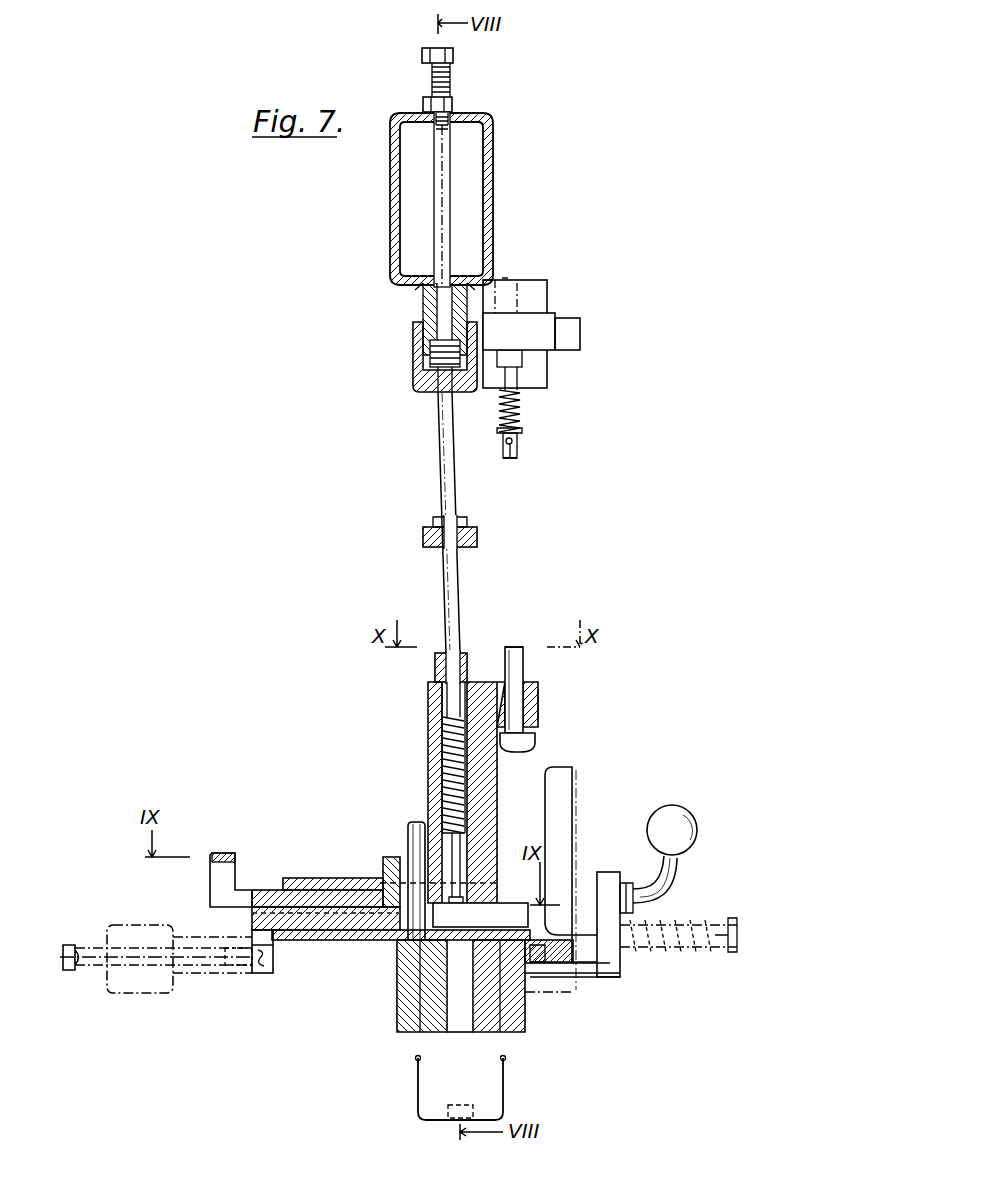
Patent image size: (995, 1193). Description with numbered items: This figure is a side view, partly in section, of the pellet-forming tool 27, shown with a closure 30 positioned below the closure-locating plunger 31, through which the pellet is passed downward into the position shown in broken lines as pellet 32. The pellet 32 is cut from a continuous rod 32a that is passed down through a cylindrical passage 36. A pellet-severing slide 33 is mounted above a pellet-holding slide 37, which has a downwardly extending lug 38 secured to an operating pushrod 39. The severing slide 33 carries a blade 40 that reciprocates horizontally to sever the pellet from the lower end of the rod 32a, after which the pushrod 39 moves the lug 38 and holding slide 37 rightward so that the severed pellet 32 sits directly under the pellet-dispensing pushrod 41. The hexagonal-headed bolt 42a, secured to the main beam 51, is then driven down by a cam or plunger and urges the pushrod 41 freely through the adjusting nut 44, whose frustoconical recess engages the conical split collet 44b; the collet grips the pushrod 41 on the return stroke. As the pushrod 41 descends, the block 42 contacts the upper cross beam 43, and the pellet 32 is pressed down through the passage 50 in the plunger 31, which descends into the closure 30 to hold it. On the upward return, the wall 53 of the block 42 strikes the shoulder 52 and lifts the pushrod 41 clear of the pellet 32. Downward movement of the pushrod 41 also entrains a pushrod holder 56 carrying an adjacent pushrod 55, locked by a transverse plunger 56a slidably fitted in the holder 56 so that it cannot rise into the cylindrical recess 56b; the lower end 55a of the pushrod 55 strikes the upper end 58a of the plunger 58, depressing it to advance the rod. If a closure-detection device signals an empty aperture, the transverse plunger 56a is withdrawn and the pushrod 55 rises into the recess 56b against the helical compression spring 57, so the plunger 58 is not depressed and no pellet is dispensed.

The bolt 42a is at (452, 57).
The main beam 51 is at (490, 212).
The cylindrical recess 56b is at (512, 300).
The transverse plunger 56a is at (538, 348).
The pushrod holder 56 is at (545, 380).
The shoulder 52 is at (424, 356).
The block 42 is at (422, 392).
The wall 53 is at (456, 392).
The helical compression spring 57 is at (518, 415).
The adjacent pushrod 55 is at (515, 448).
The lower end of adjacent pushrod 55a is at (515, 458).
The upper cross beam 43 is at (424, 539).
The upper end of plunger 58a is at (515, 650).
The pellet-forming tool 27 is at (551, 689).
The adjusting nut 44 is at (437, 663).
The split collet 44b is at (440, 711).
The plunger 58 is at (515, 708).
The pellet-dispensing pushrod 41 is at (455, 822).
The continuous rod 32a is at (412, 828).
The pellet-severing slide 33 is at (214, 855).
The cylindrical passage 36 is at (392, 853).
The blade 40 is at (380, 883).
The pellet-holding slide 37 is at (373, 936).
The lug 38 is at (263, 976).
The operating pushrod 39 is at (93, 958).
The closure-locating plunger 31 is at (430, 998).
The passage 50 is at (527, 1031).
The pellet 32 is at (448, 1111).
The closure 30 is at (505, 1090).